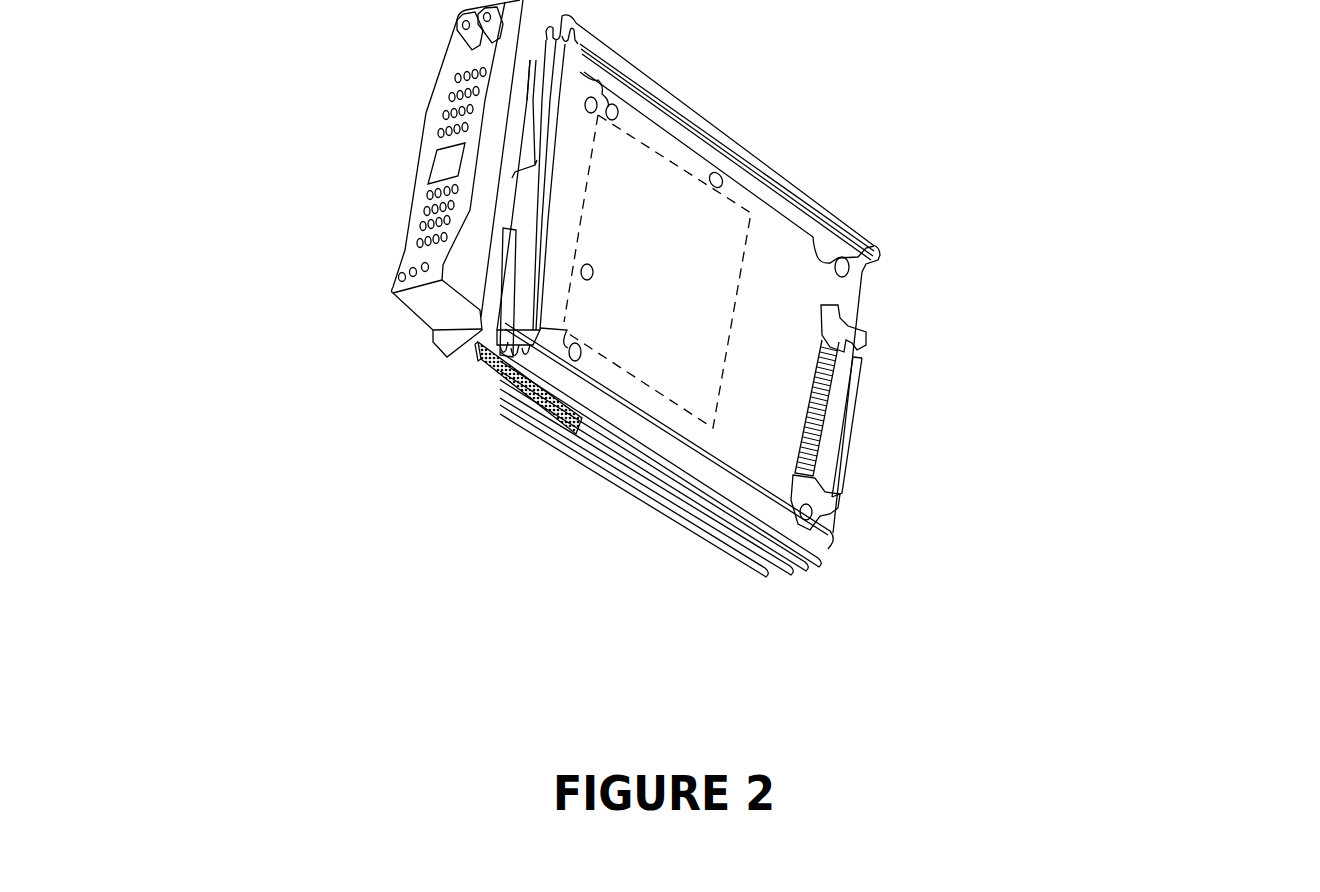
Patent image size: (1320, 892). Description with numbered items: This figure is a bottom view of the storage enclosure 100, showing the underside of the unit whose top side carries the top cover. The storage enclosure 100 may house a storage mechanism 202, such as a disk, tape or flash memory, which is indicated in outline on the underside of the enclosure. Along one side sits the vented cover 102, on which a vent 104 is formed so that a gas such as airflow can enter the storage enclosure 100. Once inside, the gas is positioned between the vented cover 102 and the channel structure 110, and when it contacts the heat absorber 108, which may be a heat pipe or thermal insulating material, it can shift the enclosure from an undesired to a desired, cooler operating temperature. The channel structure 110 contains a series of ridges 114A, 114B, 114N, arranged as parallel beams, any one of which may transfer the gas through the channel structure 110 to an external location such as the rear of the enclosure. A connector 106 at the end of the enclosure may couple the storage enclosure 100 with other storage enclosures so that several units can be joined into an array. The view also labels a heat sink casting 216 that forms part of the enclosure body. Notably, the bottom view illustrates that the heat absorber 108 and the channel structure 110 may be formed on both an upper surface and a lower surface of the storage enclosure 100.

The storage enclosure 100 is at (957, 598).
The vented cover 102 is at (418, 188).
The vent 104 is at (456, 88).
The connector 106 is at (848, 380).
The heat absorber 108 is at (498, 370).
The channel structure 110 is at (593, 492).
The ridge 114A is at (714, 536).
The ridge 114B is at (750, 548).
The ridge 114N is at (794, 560).
The storage mechanism 202 is at (640, 350).
The heat sink casting 216 is at (533, 17).